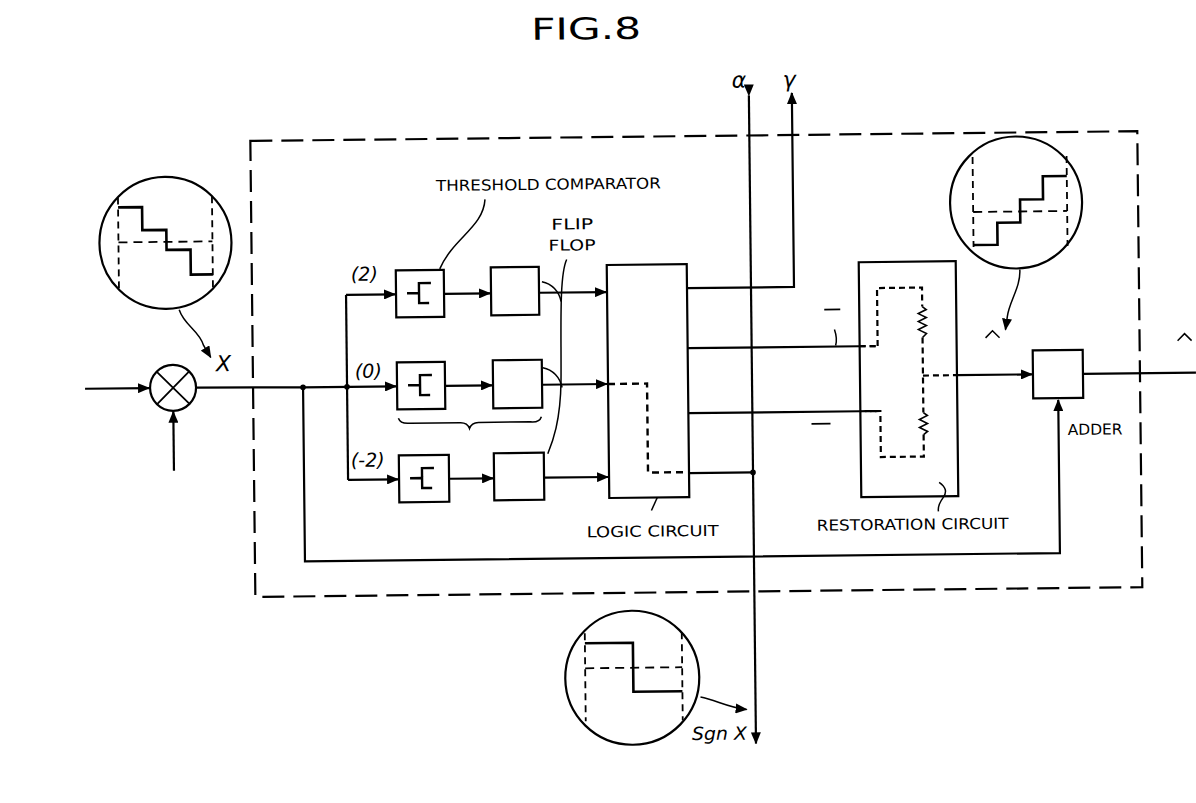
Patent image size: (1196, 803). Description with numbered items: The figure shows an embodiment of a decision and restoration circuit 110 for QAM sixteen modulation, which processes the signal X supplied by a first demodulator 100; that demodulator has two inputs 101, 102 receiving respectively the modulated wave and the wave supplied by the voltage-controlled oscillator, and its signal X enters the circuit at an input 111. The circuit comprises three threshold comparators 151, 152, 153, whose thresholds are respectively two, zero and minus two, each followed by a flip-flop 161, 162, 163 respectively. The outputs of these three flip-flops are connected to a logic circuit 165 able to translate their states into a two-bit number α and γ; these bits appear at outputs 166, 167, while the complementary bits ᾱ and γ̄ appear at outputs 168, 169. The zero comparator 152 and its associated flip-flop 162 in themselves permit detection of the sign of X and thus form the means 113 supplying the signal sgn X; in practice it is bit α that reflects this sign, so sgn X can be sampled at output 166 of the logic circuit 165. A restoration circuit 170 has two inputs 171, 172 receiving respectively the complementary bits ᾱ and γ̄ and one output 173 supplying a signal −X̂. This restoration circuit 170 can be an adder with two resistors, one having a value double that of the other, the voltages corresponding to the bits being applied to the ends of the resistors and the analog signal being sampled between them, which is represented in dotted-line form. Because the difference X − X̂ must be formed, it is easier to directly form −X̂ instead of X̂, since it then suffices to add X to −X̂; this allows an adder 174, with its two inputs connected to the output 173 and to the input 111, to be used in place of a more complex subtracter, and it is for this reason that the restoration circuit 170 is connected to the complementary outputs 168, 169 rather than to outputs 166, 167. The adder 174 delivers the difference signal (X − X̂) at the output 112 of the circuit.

The demodulator 100 is at (152, 401).
The input 101 is at (148, 374).
The input 102 is at (178, 409).
The decision and restoration circuit 110 is at (503, 141).
The input 111 is at (263, 376).
The output 112 is at (1143, 385).
The means supplying the signal sgn X 113 is at (469, 434).
The threshold comparator 151 is at (410, 267).
The threshold comparator 152 is at (414, 359).
The threshold comparator 153 is at (412, 500).
The flip-flop 161 is at (513, 265).
The flip-flop 162 is at (515, 358).
The flip-flop 163 is at (520, 498).
The logic circuit 165 is at (637, 264).
The output 166 is at (690, 473).
The output 167 is at (690, 290).
The output 168 is at (690, 412).
The output 169 is at (690, 349).
The restoration circuit 170 is at (896, 264).
The input 171 is at (858, 410).
The input 172 is at (856, 350).
The output 173 is at (958, 380).
The adder 174 is at (1079, 412).